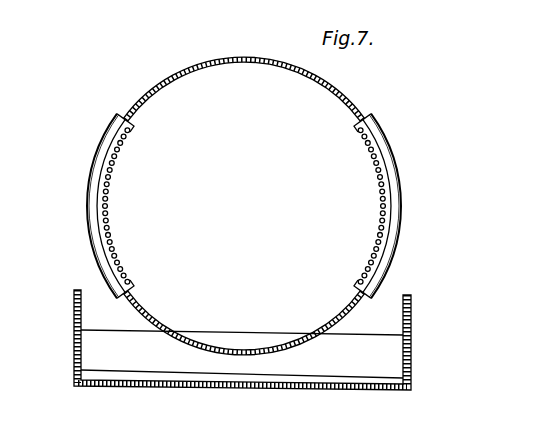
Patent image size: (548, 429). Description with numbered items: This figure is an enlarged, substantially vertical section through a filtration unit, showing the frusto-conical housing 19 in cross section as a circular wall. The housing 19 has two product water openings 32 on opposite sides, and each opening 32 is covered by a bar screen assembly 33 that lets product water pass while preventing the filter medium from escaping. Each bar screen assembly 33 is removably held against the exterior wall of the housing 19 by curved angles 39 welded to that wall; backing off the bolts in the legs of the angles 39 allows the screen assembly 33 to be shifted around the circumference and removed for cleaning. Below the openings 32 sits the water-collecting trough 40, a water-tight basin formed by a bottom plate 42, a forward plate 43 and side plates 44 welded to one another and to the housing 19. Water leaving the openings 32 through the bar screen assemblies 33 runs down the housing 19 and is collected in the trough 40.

The housing 19 is at (256, 55).
The curved angles 39 is at (105, 132).
The product water openings 32 is at (125, 131).
The bar screen assembly 33 is at (115, 225).
The water-collecting trough 40 is at (188, 397).
The side plates 44 is at (73, 352).
The bottom plate 42 is at (383, 397).
The forward plate 43 is at (390, 335).